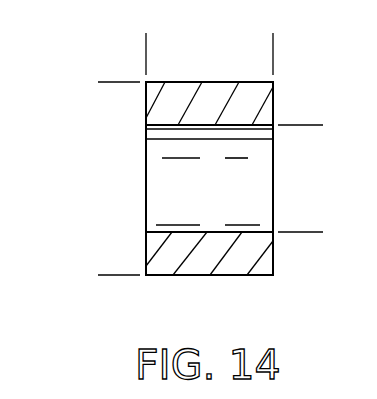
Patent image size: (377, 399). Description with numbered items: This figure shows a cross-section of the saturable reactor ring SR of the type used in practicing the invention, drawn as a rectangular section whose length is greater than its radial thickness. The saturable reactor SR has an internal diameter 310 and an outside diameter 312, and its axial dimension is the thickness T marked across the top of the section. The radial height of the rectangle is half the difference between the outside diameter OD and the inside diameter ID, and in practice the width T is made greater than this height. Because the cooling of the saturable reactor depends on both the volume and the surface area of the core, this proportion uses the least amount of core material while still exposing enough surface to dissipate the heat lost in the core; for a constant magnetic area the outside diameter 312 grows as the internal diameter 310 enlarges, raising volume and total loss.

The internal diameter 310 is at (144, 178).
The outside diameter 312 is at (228, 276).
The saturable reactor ring SR is at (286, 90).
The thickness T is at (261, 44).
The outside diameter OD is at (108, 94).
The inside diameter ID is at (310, 137).